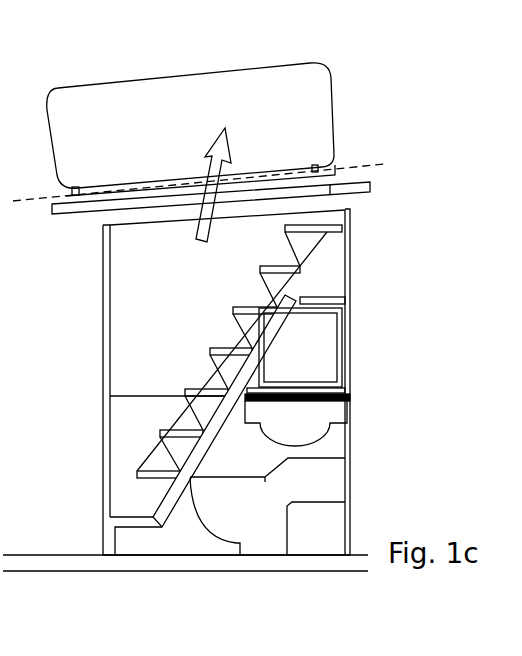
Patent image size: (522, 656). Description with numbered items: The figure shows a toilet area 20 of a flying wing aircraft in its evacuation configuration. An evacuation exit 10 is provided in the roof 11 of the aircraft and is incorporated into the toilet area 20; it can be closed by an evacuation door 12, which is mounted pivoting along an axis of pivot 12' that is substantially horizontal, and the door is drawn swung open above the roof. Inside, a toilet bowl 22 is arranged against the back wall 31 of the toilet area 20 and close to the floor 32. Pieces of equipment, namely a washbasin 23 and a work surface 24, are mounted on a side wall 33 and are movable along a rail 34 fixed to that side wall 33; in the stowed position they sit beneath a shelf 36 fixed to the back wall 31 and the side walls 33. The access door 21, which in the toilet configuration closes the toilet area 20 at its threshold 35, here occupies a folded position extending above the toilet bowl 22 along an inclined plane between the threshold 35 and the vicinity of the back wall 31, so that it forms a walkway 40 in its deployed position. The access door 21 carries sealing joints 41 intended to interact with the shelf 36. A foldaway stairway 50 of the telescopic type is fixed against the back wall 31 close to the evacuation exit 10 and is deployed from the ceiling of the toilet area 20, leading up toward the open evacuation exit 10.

The evacuation exit 10 is at (317, 186).
The roof 11 is at (358, 182).
The evacuation door 12 is at (190, 104).
The axis of pivot 12' is at (209, 149).
The toilet area 20 is at (78, 442).
The access door 21 is at (206, 446).
The toilet bowl 22 is at (262, 531).
The washbasin 23 is at (347, 405).
The work surface 24 is at (347, 393).
The back wall 31 is at (350, 240).
The floor 32 is at (163, 572).
The side wall 33 is at (145, 293).
The rail 34 is at (147, 395).
The threshold 35 is at (121, 550).
The shelf 36 is at (347, 305).
The walkway 40 is at (143, 494).
The sealing joints 41 is at (302, 294).
The foldaway stairway 50 is at (302, 262).